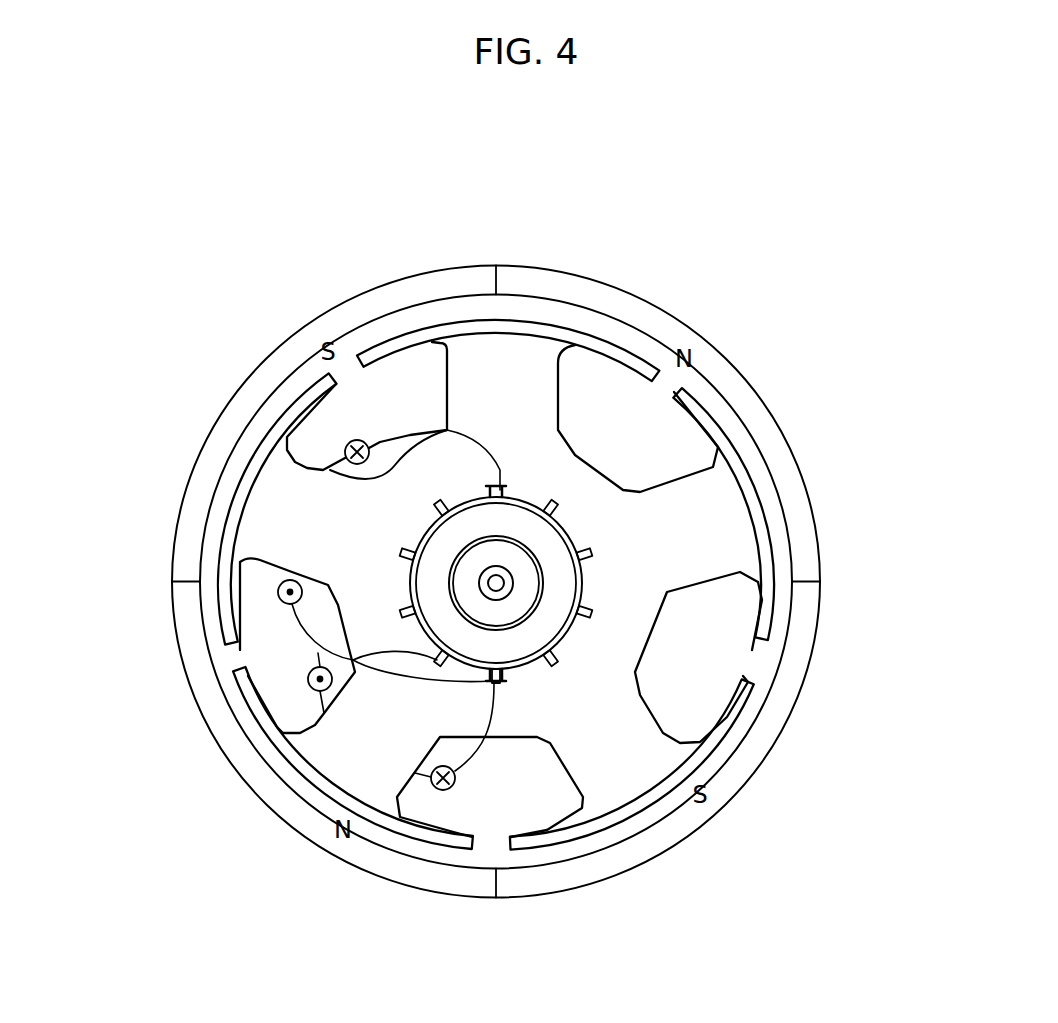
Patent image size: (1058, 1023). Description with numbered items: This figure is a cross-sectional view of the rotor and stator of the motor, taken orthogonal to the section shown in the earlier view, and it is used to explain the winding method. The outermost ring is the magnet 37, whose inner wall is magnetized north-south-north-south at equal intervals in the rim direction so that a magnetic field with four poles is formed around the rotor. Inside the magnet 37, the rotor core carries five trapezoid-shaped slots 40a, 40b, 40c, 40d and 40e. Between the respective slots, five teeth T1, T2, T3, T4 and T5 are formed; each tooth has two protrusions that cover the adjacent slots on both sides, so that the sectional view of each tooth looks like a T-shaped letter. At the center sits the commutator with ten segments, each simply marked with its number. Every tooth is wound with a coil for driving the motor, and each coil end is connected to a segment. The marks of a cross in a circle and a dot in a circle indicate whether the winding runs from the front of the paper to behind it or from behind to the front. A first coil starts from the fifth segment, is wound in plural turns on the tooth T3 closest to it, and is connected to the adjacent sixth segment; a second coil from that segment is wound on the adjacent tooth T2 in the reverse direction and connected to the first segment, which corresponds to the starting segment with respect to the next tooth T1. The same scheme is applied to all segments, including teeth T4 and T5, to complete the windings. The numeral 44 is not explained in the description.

The magnet 37 is at (723, 350).
The stator core 44 is at (456, 360).
The slot 40a is at (377, 405).
The slot 40b is at (272, 638).
The slot 40c is at (533, 807).
The slot 40d is at (725, 627).
The slot 40e is at (597, 368).
The tooth T1 is at (500, 362).
The tooth T2 is at (270, 525).
The tooth T3 is at (337, 750).
The tooth T4 is at (637, 782).
The tooth T5 is at (725, 505).